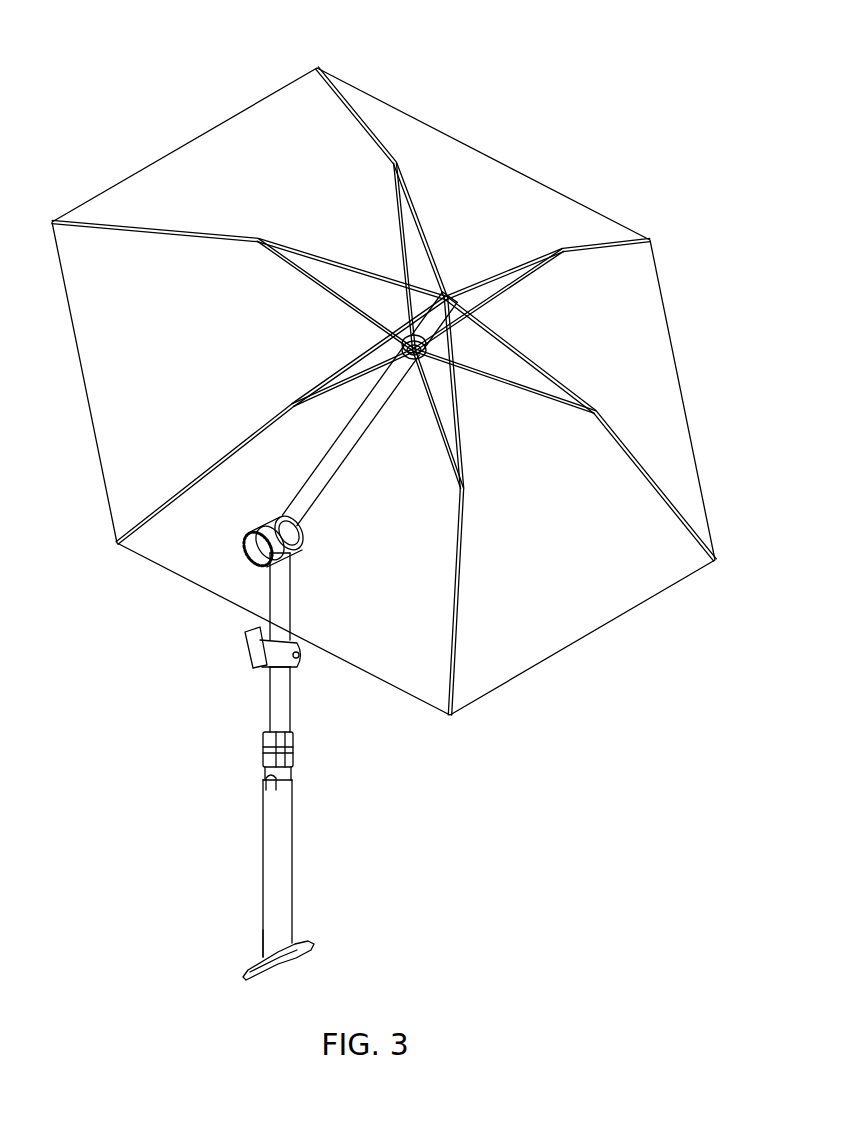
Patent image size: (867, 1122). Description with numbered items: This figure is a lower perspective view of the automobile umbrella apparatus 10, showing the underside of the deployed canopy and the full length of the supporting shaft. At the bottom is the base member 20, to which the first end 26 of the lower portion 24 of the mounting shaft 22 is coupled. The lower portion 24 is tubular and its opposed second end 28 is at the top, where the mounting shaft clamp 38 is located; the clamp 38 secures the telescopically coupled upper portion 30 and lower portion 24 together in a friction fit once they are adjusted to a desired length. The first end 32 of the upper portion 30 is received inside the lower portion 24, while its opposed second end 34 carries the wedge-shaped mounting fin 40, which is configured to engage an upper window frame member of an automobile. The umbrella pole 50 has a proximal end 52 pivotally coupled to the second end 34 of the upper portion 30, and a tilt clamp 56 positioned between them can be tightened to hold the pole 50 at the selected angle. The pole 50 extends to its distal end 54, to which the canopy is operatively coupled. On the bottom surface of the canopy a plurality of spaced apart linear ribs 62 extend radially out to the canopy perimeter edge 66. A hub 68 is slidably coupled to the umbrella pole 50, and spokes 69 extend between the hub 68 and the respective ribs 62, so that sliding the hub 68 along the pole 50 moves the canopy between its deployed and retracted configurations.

The automobile umbrella apparatus 10 is at (480, 92).
The base member 20 is at (304, 960).
The mounting shaft 22 is at (302, 763).
The lower portion 24 is at (305, 860).
The first end 26 is at (264, 933).
The second end 28 is at (268, 793).
The upper portion 30 is at (302, 608).
The first end 32 is at (271, 715).
The second end 34 is at (272, 578).
The mounting shaft clamp 38 is at (294, 744).
The mounting fin 40 is at (243, 653).
The umbrella pole 50 is at (305, 463).
The proximal end 52 is at (311, 505).
The distal end 54 is at (442, 312).
The tilt clamp 56 is at (250, 548).
The ribs 62 is at (390, 391).
The canopy perimeter edge 66 is at (383, 391).
The hub 68 is at (402, 348).
The spokes 69 is at (420, 326).